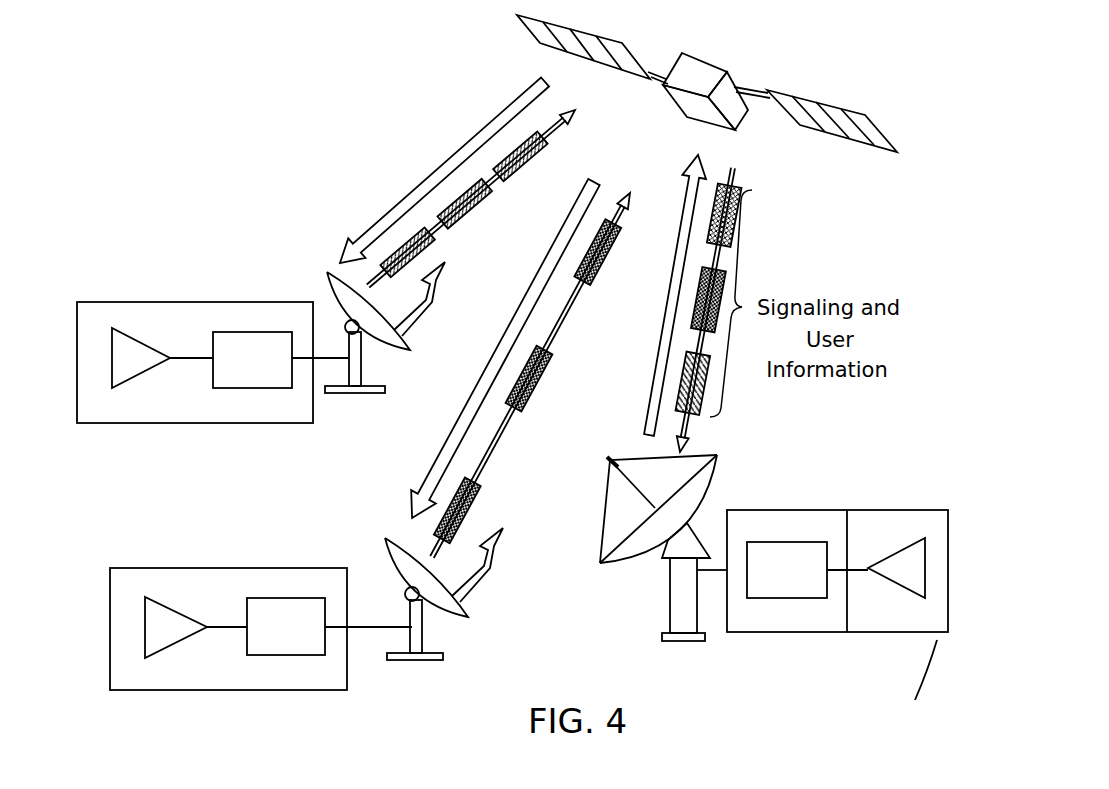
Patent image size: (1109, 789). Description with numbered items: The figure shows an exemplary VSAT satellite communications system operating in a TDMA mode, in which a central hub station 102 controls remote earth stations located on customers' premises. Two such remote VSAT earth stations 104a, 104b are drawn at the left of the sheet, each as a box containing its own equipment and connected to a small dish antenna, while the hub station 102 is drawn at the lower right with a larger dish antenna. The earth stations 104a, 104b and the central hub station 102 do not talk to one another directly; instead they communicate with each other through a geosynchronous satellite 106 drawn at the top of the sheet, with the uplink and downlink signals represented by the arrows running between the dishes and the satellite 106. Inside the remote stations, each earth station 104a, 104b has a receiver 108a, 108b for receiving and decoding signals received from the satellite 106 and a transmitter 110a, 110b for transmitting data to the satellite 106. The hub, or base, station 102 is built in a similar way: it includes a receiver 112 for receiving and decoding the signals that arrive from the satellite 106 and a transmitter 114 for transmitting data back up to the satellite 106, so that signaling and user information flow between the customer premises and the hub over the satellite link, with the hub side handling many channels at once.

The central hub station 102 is at (837, 588).
The earth station 104a is at (210, 353).
The earth station 104b is at (257, 623).
The geosynchronous satellite 106 is at (730, 77).
The receiver 108a is at (140, 377).
The receiver 108b is at (175, 640).
The transmitter 110a is at (252, 390).
The transmitter 110b is at (285, 657).
The receiver 112 is at (893, 587).
The transmitter 114 is at (788, 598).